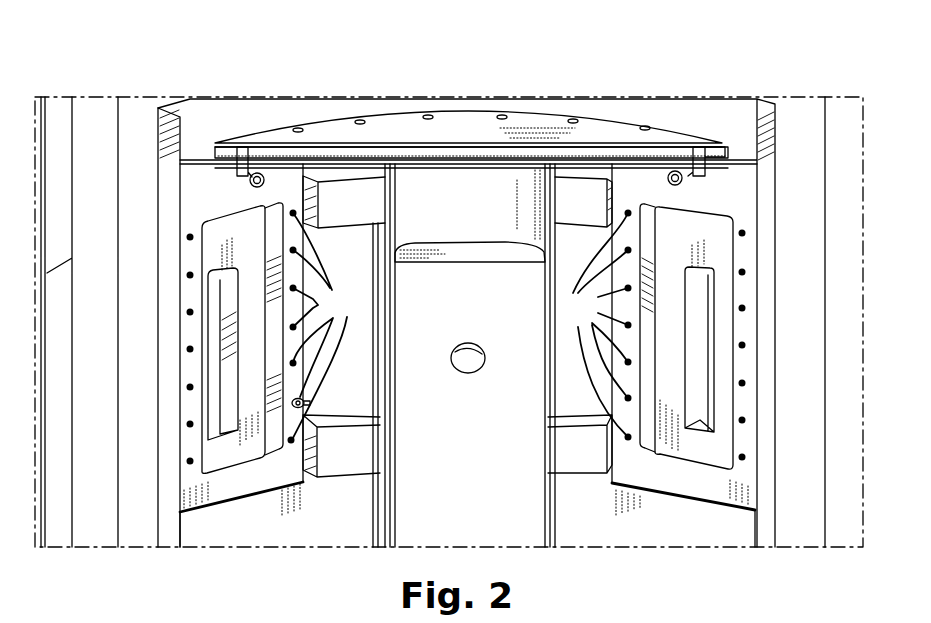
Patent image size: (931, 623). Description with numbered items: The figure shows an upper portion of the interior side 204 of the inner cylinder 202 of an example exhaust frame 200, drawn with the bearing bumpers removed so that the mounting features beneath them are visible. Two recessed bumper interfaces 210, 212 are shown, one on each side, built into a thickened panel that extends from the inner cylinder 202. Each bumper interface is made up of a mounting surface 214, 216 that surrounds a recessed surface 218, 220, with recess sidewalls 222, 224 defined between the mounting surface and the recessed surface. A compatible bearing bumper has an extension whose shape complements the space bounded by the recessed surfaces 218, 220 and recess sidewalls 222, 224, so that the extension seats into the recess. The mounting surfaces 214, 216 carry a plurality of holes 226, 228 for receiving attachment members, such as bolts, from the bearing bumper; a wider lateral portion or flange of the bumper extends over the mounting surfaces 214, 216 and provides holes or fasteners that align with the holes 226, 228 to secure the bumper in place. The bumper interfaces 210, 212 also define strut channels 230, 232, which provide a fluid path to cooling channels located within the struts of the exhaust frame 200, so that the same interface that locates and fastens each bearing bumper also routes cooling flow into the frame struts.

The exhaust frame 200 is at (221, 84).
The inner cylinder 202 is at (745, 98).
The interior side 204 is at (193, 135).
The bumper interface 210 is at (180, 305).
The bumper interface 212 is at (757, 333).
The mounting surface 214 is at (182, 477).
The mounting surface 216 is at (737, 475).
The recessed surface 218 is at (205, 445).
The recessed surface 220 is at (720, 262).
The recess sidewall 222 is at (238, 463).
The recess sidewall 224 is at (685, 460).
The plurality of holes 226 is at (326, 327).
The plurality of holes 228 is at (594, 325).
The strut channel 230 is at (218, 293).
The strut channel 232 is at (690, 288).